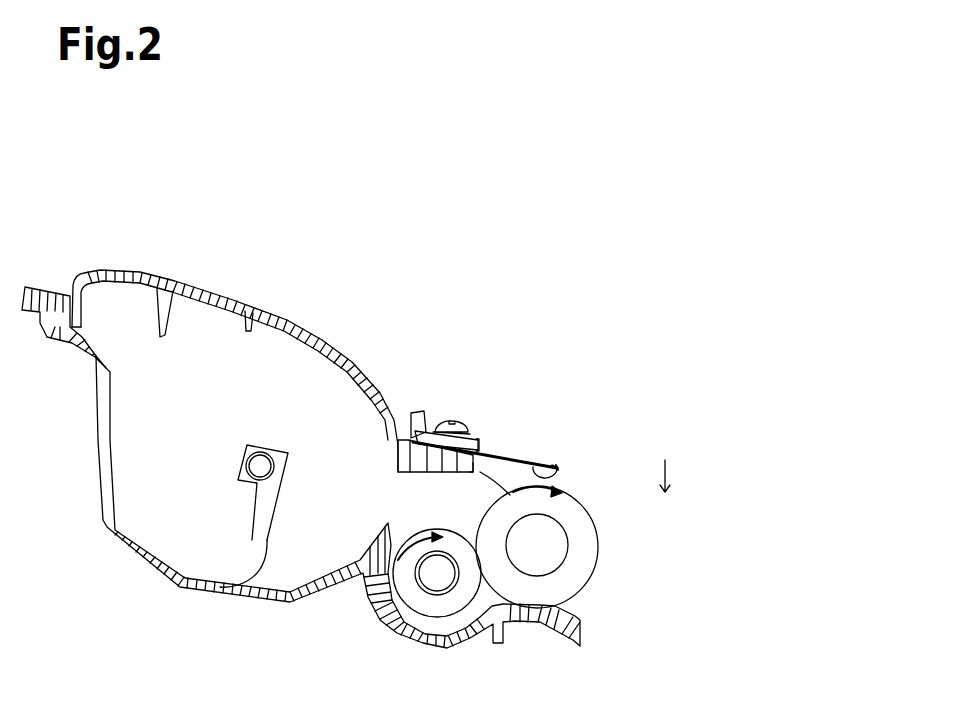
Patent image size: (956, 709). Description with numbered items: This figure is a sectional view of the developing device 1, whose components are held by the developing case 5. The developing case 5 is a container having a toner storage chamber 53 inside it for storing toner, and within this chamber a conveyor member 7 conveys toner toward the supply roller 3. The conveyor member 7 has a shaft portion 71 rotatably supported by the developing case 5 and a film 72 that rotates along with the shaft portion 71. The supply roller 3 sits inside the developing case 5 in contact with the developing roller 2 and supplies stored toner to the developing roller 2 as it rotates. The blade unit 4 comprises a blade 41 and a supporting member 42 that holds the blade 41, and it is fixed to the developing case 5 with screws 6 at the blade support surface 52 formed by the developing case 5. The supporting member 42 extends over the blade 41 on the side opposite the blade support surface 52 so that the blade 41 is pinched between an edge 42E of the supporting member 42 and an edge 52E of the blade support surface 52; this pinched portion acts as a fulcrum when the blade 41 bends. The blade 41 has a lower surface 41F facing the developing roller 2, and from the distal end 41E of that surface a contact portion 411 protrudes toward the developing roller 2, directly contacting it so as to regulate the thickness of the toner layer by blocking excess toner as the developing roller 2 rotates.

The developing device 1 is at (254, 240).
The developing roller 2 is at (583, 565).
The supply roller 3 is at (437, 608).
The blade unit 4 is at (460, 408).
The developing case 5 is at (92, 268).
The screw 6 is at (444, 421).
The conveyor member 7 is at (242, 492).
The blade 41 is at (500, 453).
The distal end 41E is at (558, 468).
The lower surface 41F is at (509, 462).
The contact portion 411 is at (560, 468).
The supporting member 42 is at (397, 447).
The edge of the supporting member 42E is at (482, 445).
The blade support surface 52 is at (398, 474).
The edge of the blade support surface 52E is at (482, 476).
The toner storage chamber 53 is at (172, 402).
The shaft portion 71 is at (245, 461).
The film 72 is at (262, 565).